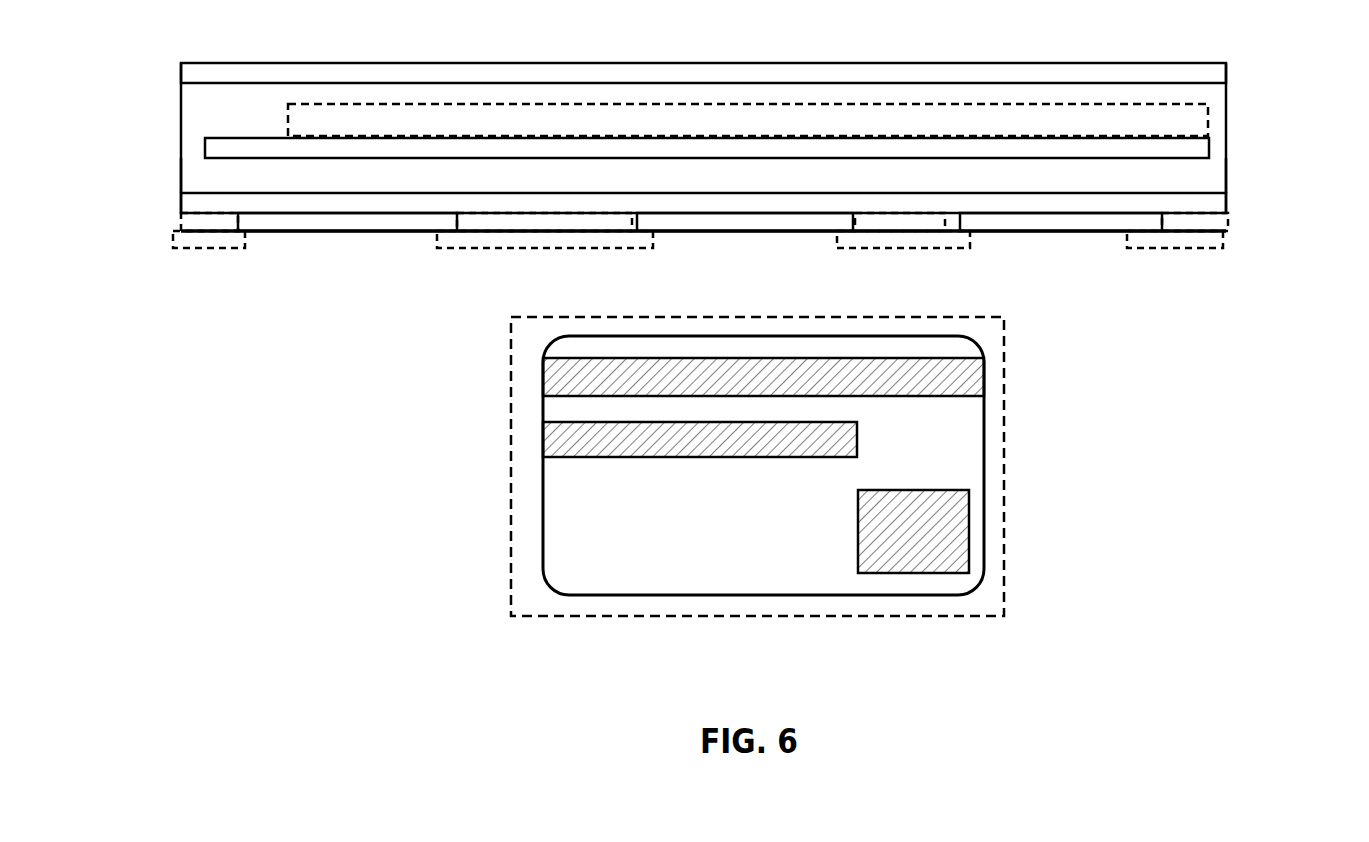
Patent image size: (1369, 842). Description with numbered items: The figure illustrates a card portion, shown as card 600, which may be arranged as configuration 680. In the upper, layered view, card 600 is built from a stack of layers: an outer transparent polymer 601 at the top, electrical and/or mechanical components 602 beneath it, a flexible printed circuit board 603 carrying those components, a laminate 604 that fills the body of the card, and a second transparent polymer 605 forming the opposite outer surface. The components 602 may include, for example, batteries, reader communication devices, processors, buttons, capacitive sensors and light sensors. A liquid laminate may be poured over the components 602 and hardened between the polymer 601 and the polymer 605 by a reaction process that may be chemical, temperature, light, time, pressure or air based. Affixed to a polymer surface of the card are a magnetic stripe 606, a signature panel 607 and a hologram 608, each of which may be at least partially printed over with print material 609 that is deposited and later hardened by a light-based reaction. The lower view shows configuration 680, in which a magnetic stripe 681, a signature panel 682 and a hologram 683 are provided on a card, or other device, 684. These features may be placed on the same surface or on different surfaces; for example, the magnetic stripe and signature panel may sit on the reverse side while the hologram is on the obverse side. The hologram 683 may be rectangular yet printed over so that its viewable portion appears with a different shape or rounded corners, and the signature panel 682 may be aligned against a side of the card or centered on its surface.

The card 600 is at (1343, 117).
The transparent polymer 601 is at (232, 62).
The electrical and/or mechanical components 602 is at (310, 120).
The flexible printed circuit board 603 is at (230, 137).
The laminate 604 is at (195, 180).
The transparent polymer 605 is at (183, 207).
The magnetic stripe 606 is at (353, 235).
The signature panel 607 is at (757, 233).
The hologram 608 is at (1088, 238).
The print material 609 is at (1223, 233).
The configuration 680 is at (511, 332).
The magnetic stripe 681 is at (565, 390).
The signature panel 682 is at (682, 457).
The hologram 683 is at (858, 507).
The card 684 is at (542, 570).